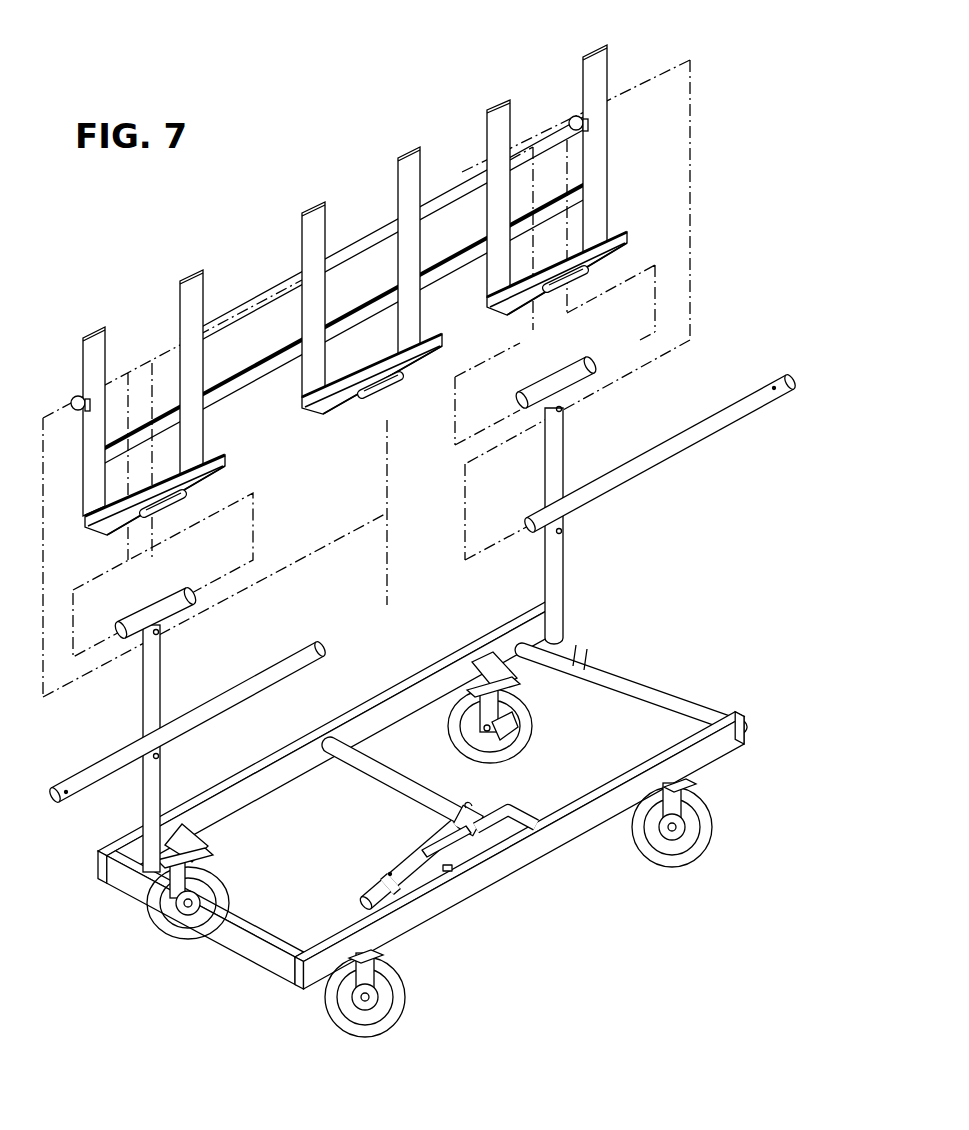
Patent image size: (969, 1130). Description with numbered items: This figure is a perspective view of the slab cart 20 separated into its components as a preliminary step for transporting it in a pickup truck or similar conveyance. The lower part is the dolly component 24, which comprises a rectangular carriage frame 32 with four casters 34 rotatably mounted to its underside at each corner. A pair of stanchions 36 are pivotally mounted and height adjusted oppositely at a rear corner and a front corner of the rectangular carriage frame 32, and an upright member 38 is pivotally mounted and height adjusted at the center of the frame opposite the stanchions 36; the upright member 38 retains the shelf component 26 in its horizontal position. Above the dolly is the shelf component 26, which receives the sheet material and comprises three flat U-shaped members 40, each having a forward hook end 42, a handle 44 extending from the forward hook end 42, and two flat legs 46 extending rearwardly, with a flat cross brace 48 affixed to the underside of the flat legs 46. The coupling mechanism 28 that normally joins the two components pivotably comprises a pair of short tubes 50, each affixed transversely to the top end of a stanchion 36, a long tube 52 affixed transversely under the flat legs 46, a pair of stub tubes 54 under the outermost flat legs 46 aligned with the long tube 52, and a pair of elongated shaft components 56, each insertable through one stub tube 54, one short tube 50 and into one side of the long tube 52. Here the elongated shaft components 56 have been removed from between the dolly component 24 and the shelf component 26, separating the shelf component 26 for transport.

The slab cart 20 is at (423, 534).
The dolly component 24 is at (757, 716).
The shelf component 26 is at (363, 296).
The coupling mechanism 28 is at (745, 381).
The rectangular carriage frame 32 is at (288, 991).
The casters 34 is at (182, 934).
The stanchions 36 is at (153, 787).
The upright member 38 is at (416, 869).
The flat U-shaped members 40 is at (363, 296).
The forward hook end 42 is at (88, 527).
The handle 44 is at (182, 499).
The flat legs 46 is at (193, 297).
The flat cross brace 48 is at (222, 392).
The short tubes 50 is at (150, 616).
The long tube 52 is at (245, 310).
The stub tubes 54 is at (75, 396).
The elongated shaft components 56 is at (423, 567).